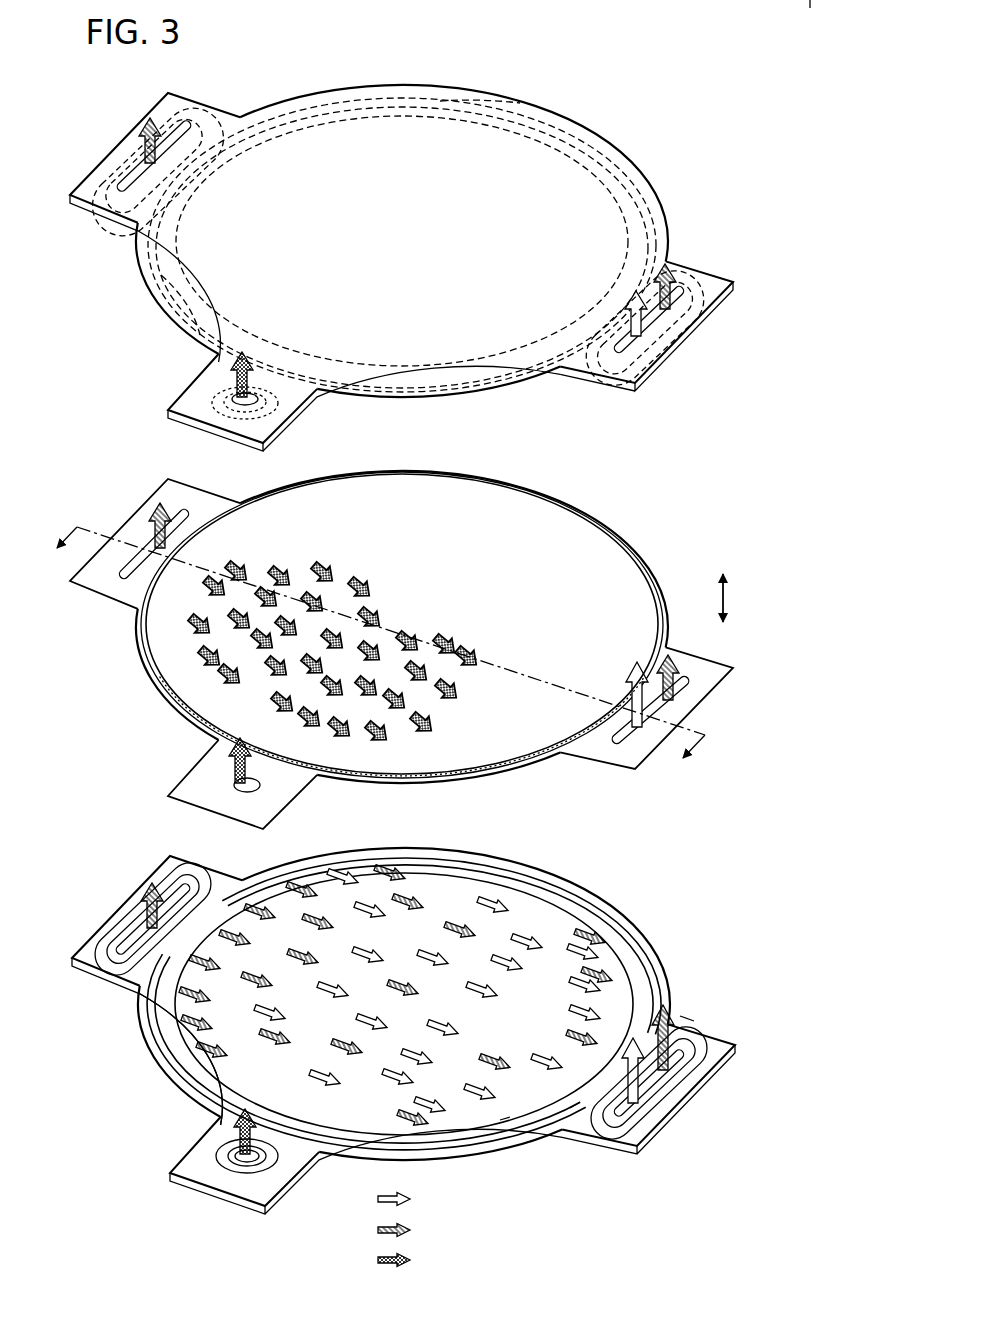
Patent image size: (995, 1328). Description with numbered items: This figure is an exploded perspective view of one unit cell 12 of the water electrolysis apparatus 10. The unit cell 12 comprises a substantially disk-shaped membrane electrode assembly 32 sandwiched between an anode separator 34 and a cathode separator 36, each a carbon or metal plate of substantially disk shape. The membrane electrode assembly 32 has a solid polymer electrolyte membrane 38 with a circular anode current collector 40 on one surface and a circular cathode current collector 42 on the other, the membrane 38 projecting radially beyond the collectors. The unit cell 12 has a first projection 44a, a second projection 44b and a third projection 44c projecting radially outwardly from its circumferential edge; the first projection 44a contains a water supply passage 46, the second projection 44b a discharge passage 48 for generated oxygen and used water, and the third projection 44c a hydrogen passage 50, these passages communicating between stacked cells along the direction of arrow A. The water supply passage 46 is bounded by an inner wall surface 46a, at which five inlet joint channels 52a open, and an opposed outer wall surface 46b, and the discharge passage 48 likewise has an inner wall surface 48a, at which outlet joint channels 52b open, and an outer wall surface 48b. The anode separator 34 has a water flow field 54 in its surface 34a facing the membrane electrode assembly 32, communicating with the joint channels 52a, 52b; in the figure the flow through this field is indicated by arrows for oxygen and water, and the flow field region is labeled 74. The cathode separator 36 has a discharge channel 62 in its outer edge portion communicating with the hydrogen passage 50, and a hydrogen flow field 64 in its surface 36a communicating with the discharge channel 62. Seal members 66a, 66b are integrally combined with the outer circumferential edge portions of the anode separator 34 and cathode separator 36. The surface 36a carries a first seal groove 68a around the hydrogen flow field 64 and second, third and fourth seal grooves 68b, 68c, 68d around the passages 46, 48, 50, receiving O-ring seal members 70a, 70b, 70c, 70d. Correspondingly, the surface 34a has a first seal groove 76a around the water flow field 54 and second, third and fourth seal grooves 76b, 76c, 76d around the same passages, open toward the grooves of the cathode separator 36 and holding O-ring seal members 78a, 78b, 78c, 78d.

The fuel cell 10 is at (402, 658).
The unit cell 12 is at (402, 658).
The membrane electrode assembly 32 is at (652, 562).
The anode separator 34 is at (637, 913).
The surface of the anode separator 34a is at (604, 896).
The cathode separator 36 is at (636, 152).
The surface of the cathode separator 36a is at (489, 103).
The solid polymer electrolyte membrane 38 is at (148, 658).
The anode current collector 40 is at (493, 726).
The cathode current collector 42 is at (195, 688).
The first projection 44a is at (85, 188).
The second projection 44b is at (648, 381).
The third projection 44c is at (185, 400).
The water supply passage 46 is at (128, 172).
The inner wall surface 46a is at (182, 895).
The outer wall surface 46b is at (140, 965).
The discharge passage 48 is at (638, 343).
The inner wall surface 48a is at (673, 1057).
The outer wall surface 48b is at (630, 1107).
The hydrogen passage 50 is at (255, 408).
The inlet joint channels 52a is at (221, 889).
The outlet joint channels 52b is at (588, 1118).
The water flow field 54 is at (565, 972).
The discharge channel 62 is at (277, 352).
The hydrogen flow field 64 is at (176, 303).
The seal member 66a is at (170, 1073).
The seal member 66b is at (140, 270).
The first seal groove 68a is at (468, 386).
The second seal groove 68b is at (167, 113).
The third seal groove 68c is at (690, 280).
The fourth seal groove 68d is at (230, 440).
The first seal member 70a is at (462, 402).
The second seal member 70b is at (190, 124).
The third seal member 70c is at (700, 322).
The fourth seal member 70d is at (203, 422).
The oxygen-containing gas flow field 74 is at (268, 1130).
The first seal groove 76a is at (535, 1143).
The second seal groove 76b is at (116, 927).
The third seal groove 76c is at (690, 1024).
The fourth seal groove 76d is at (202, 1180).
The first seal member 78a is at (508, 1117).
The second seal member 78b is at (138, 915).
The third seal member 78c is at (693, 1048).
The fourth seal member 78d is at (238, 1170).